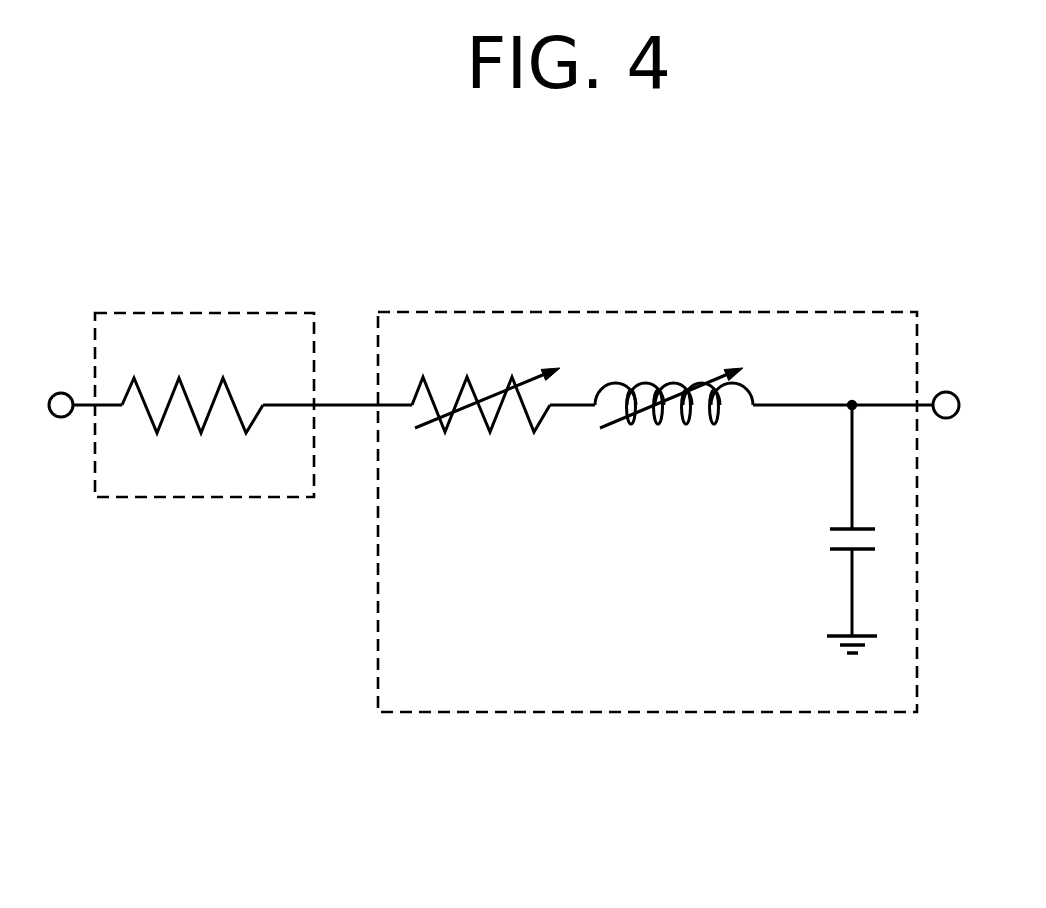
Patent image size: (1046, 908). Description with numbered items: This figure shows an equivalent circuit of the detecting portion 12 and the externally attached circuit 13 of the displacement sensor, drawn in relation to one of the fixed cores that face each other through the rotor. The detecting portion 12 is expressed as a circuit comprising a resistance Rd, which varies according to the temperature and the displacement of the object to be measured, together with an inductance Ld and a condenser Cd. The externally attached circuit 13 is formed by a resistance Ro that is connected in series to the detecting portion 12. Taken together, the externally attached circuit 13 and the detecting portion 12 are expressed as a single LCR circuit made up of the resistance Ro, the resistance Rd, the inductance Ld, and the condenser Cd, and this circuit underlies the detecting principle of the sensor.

The detecting portion 12 is at (647, 463).
The externally attached circuit 13 is at (204, 356).
The resistance Ro is at (192, 428).
The resistance Rd is at (486, 421).
The inductance Ld is at (674, 421).
The condenser Cd is at (823, 527).